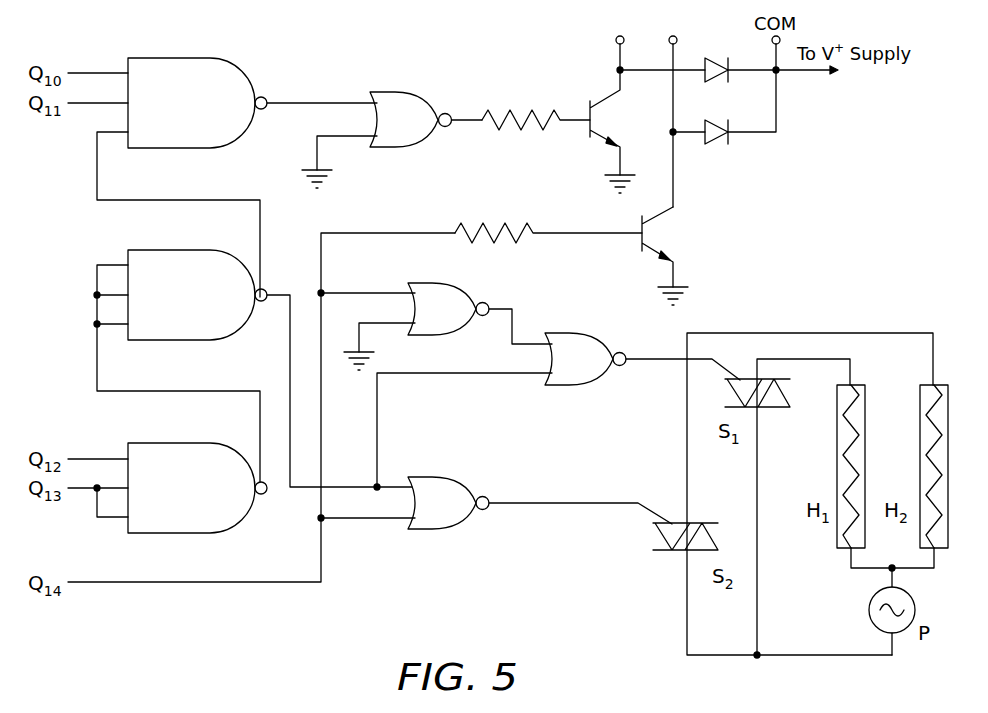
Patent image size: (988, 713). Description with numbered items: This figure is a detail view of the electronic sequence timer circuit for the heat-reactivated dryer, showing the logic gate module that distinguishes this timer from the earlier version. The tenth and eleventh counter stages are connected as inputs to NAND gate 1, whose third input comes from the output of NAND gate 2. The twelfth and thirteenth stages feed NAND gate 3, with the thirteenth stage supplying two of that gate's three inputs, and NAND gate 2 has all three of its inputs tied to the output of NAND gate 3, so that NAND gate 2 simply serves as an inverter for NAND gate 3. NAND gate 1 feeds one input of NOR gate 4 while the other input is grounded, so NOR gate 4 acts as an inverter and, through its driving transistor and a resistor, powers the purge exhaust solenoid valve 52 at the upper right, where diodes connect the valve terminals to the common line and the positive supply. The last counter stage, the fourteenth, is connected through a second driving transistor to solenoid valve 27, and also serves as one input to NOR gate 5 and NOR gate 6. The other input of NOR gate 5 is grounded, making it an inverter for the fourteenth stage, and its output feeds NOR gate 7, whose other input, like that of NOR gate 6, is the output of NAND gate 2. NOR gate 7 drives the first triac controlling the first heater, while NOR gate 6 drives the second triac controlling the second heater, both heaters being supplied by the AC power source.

The NAND gate 1 is at (167, 177).
The NAND gate 2 is at (253, 368).
The NAND gate 3 is at (167, 488).
The NOR gate 4 is at (374, 140).
The NOR gate 5 is at (436, 326).
The NOR gate 6 is at (496, 503).
The NOR gate 7 is at (557, 411).
The purge exhaust solenoid valve 52 is at (619, 43).
The solenoid valve 27 is at (671, 110).